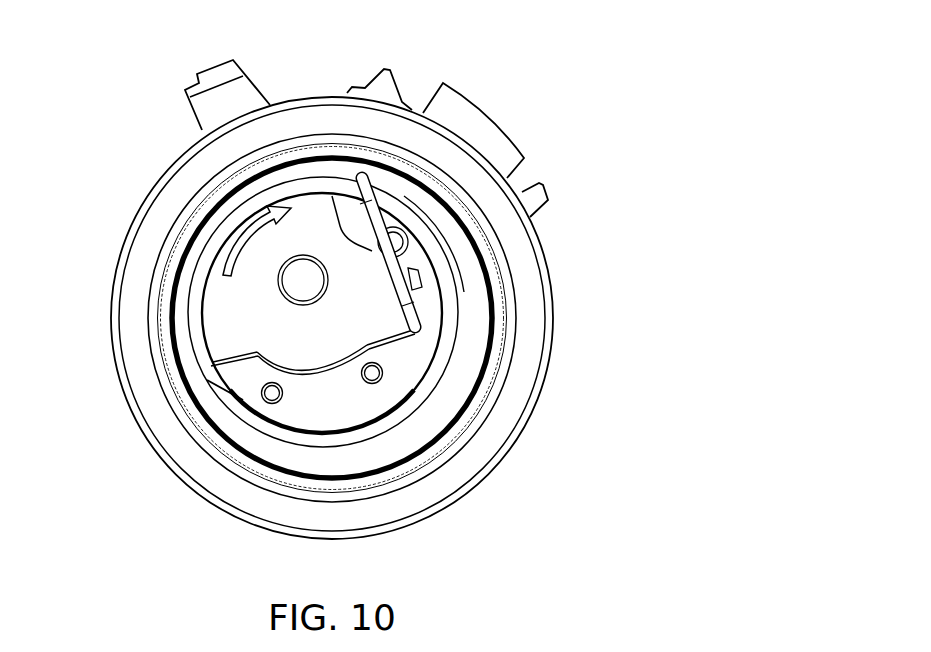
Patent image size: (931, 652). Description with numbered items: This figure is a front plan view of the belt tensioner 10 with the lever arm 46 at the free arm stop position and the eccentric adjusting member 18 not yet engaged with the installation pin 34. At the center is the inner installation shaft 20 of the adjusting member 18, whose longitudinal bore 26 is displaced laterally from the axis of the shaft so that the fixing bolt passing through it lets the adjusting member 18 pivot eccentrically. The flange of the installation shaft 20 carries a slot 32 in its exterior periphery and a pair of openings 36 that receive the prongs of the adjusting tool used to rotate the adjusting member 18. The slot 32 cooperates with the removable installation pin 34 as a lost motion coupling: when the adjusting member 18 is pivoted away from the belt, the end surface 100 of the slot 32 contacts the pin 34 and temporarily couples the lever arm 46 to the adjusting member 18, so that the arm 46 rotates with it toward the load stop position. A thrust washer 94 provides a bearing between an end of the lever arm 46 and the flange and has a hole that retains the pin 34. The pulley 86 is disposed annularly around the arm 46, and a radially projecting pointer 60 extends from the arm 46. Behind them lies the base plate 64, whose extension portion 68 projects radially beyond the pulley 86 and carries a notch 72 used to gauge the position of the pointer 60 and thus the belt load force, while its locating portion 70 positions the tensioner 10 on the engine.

The tensioner 10 is at (541, 87).
The eccentric adjusting member 18 is at (318, 445).
The installation shaft 20 is at (298, 420).
The longitudinal bore 26 is at (292, 282).
The slot 32 is at (368, 262).
The installation pin 34 is at (430, 290).
The openings 36 is at (266, 399).
The lever arm 46 is at (425, 352).
The pointer 60 is at (377, 97).
The base plate 64 is at (487, 97).
The extension portion 68 is at (507, 150).
The locating portion 70 is at (213, 77).
The notch 72 is at (537, 168).
The pulley 86 is at (138, 383).
The thrust washer 94 is at (420, 255).
The end surface 100 is at (338, 233).